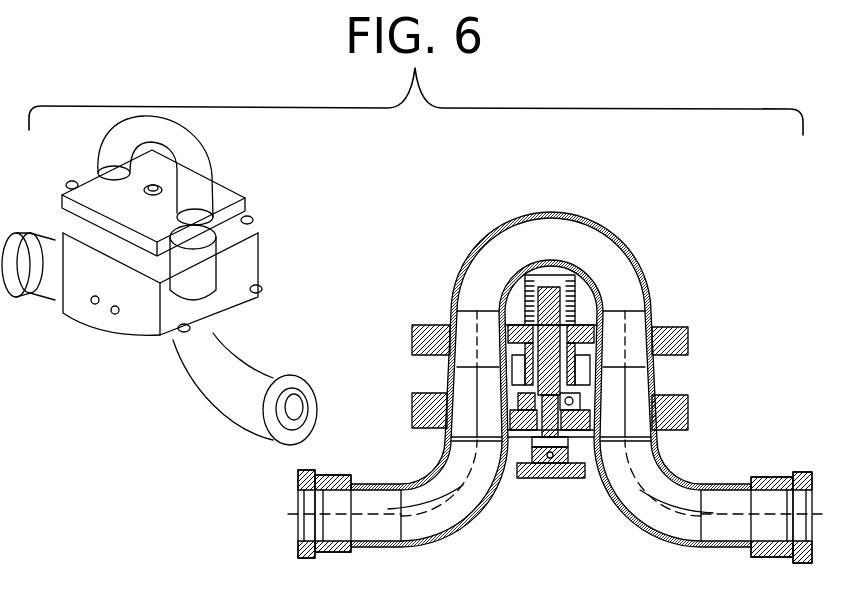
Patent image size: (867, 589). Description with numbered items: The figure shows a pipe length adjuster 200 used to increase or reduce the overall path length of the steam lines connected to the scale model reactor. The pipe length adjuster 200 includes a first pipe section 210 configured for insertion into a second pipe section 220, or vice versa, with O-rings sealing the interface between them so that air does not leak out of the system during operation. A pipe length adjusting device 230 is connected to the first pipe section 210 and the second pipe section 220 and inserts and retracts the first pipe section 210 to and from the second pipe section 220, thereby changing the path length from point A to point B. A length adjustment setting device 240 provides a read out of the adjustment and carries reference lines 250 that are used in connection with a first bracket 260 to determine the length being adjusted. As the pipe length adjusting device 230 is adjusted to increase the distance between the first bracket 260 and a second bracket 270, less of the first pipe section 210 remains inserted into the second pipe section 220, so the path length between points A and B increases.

The pipe length adjuster 200 is at (355, 172).
The first pipe section 210 is at (635, 323).
The second pipe section 220 is at (635, 387).
The pipe length adjusting device 230 is at (526, 478).
The length adjustment setting device 240 is at (547, 262).
The reference lines 250 is at (518, 268).
The first bracket 260 is at (440, 324).
The second bracket 270 is at (412, 412).